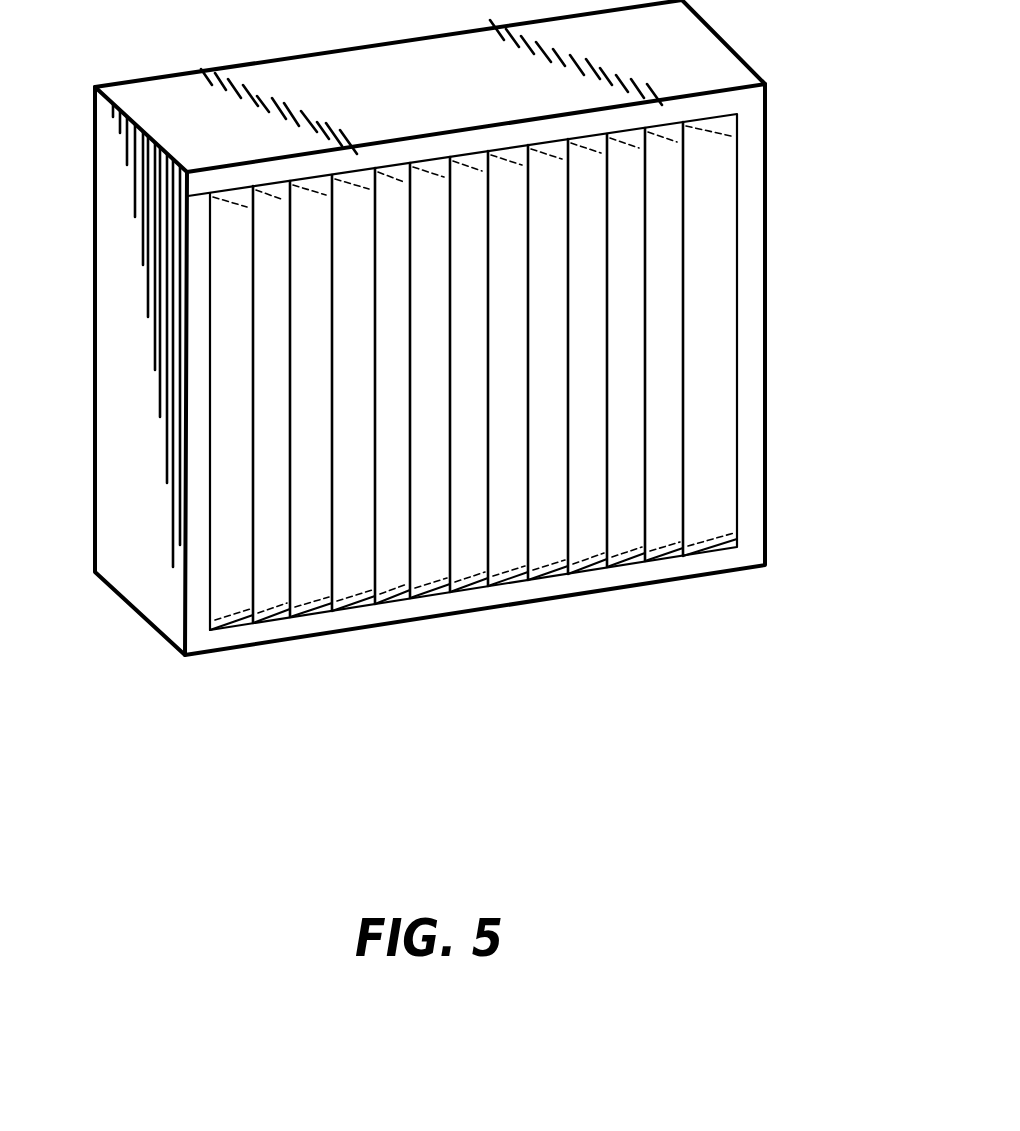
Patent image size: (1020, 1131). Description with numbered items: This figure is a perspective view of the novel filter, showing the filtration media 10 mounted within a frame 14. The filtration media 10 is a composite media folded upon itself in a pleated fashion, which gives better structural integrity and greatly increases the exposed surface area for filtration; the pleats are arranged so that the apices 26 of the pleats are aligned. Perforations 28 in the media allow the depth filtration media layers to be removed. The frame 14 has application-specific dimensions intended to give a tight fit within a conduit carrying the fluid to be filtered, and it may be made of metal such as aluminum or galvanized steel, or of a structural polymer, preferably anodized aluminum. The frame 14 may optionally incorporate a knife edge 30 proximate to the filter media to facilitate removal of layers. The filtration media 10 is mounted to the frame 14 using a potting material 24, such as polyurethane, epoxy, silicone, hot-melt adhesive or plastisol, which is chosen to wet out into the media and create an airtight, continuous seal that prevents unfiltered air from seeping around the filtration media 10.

The filtration media 10 is at (710, 208).
The frame 14 is at (142, 402).
The potting material 24 is at (265, 613).
The apices of the pleats 26 is at (492, 537).
The perforations 28 is at (192, 187).
The knife edge 30 is at (210, 257).